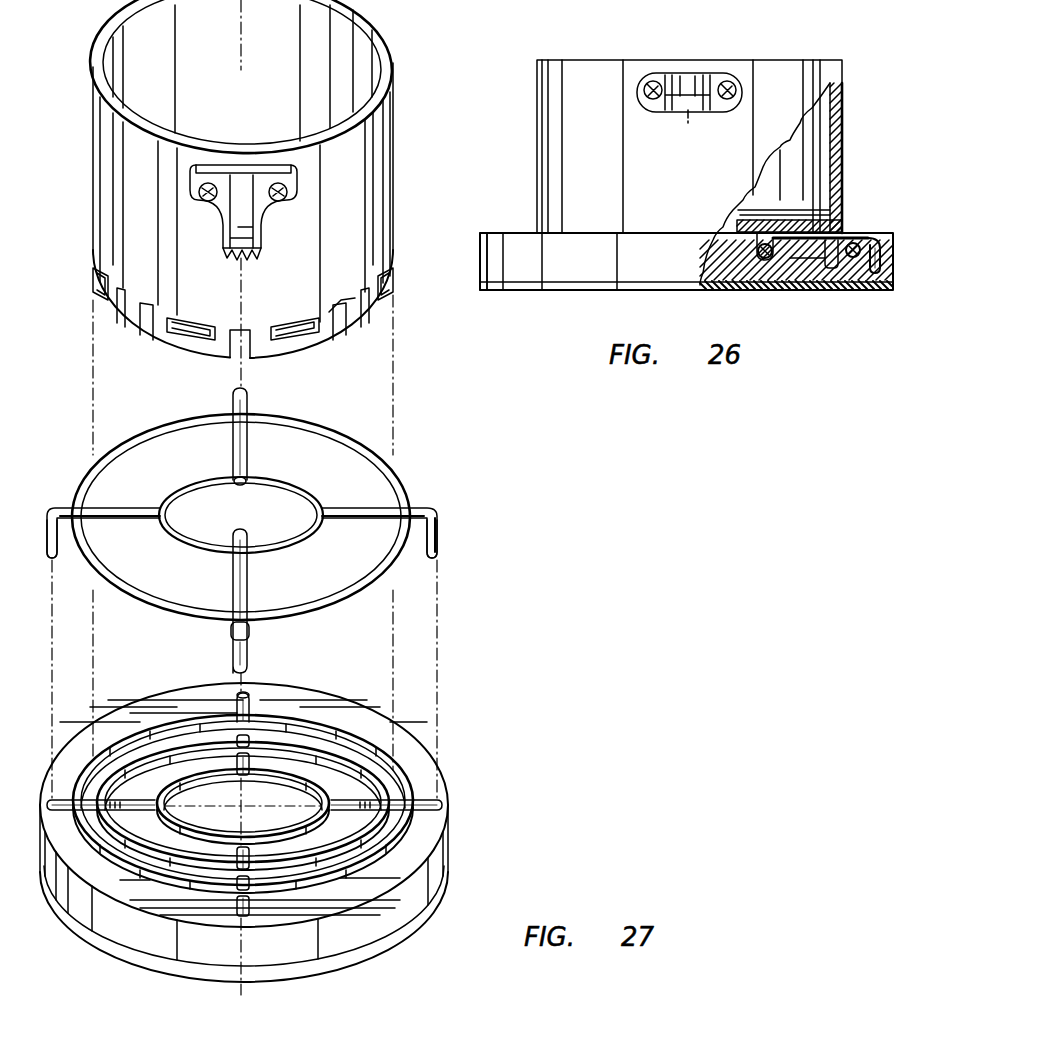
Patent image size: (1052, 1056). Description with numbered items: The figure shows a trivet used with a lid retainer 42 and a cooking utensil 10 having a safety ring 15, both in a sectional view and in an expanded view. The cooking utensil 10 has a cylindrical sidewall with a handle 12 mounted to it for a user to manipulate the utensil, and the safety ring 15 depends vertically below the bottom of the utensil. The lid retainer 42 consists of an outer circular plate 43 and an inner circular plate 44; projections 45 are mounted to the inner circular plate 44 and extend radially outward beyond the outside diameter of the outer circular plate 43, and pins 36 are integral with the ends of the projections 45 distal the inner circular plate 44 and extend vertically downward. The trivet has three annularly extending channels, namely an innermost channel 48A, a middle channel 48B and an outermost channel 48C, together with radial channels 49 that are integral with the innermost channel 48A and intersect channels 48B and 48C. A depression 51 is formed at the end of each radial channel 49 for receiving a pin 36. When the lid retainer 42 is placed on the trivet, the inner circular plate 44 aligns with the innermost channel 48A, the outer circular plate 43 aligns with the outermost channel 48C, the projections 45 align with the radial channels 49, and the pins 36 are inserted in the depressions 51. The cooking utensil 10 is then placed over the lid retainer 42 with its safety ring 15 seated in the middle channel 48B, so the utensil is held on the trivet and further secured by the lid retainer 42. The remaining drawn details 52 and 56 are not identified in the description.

In FIG. 27, the cooking utensil 10 is at (404, 110).
In FIG. 26, the cooking utensil 10 is at (848, 53).
In FIG. 27, the handle 12 is at (256, 247).
In FIG. 26, the handle 12 is at (680, 74).
In FIG. 27, the safety ring 15 is at (333, 356).
In FIG. 26, the safety ring 15 is at (806, 278).
In FIG. 27, the pins 36 is at (56, 560).
In FIG. 26, the pins 36 is at (878, 266).
In FIG. 27, the lid retainer 42 is at (264, 530).
In FIG. 26, the outer circular plate 43 is at (846, 258).
In FIG. 27, the inner circular plate 44 is at (268, 480).
In FIG. 26, the inner circular plate 44 is at (758, 262).
In FIG. 27, the projections 45 is at (116, 520).
In FIG. 26, the projections 45 is at (838, 240).
In FIG. 27, the innermost annular channel 48A is at (203, 766).
In FIG. 27, the middle annular channel 48B is at (380, 845).
In FIG. 27, the outermost annular channel 48C is at (292, 724).
In FIG. 27, the radial channels 49 is at (249, 718).
In FIG. 27, the depression 51 is at (236, 692).
In FIG. 27, the base 52 is at (244, 832).
In FIG. 26, the base 52 is at (892, 292).
In FIG. 26, the base flange 56 is at (488, 298).